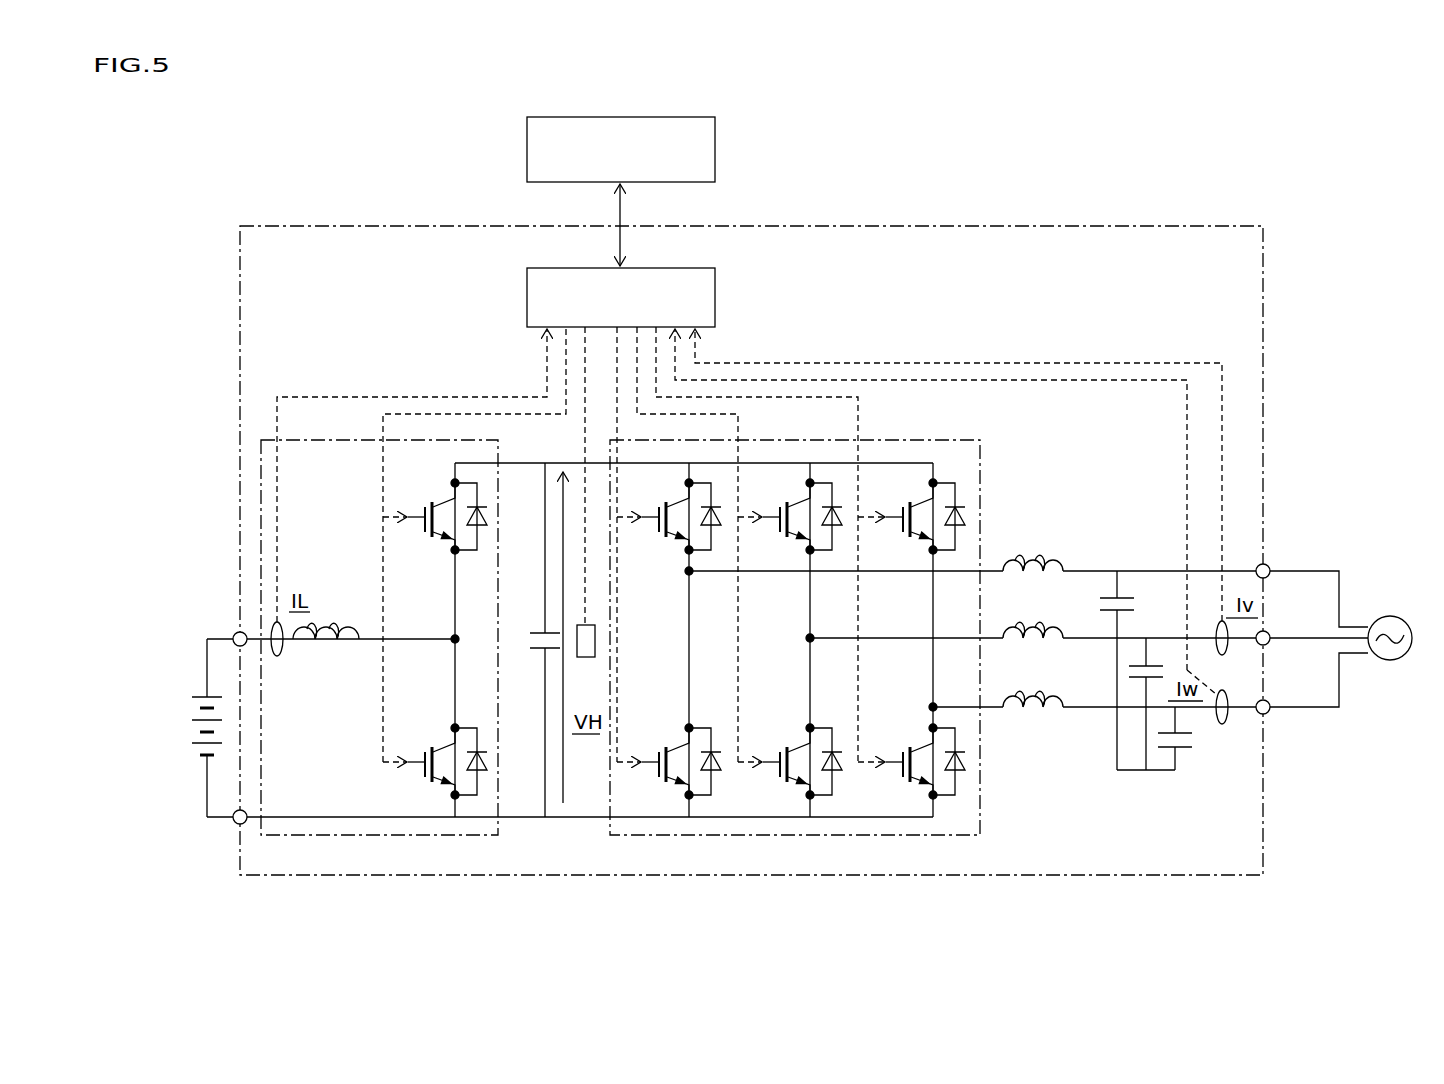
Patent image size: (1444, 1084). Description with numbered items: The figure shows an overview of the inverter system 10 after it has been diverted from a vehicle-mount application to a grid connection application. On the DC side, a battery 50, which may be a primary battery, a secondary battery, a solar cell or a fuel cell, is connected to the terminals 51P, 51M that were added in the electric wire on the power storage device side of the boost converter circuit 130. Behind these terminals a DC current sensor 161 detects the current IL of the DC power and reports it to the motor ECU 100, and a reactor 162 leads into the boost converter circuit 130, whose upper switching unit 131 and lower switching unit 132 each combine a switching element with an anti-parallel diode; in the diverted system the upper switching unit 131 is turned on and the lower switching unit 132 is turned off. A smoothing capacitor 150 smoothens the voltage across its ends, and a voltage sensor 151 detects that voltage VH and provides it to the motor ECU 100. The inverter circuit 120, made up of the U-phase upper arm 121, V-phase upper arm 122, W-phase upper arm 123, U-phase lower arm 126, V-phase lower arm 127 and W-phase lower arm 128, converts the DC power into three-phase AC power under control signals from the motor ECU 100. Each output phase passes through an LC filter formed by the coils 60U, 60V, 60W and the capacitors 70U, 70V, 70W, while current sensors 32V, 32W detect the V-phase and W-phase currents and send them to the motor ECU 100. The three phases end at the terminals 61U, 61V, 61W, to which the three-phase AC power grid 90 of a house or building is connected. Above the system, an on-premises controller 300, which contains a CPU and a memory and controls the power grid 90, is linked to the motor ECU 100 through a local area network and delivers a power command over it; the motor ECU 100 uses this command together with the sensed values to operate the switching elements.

The on-premises controller 300 is at (654, 117).
The motor ECU 100 is at (656, 268).
The inverter system 10 is at (274, 260).
The battery 50 is at (190, 723).
The terminal 51P is at (237, 632).
The terminal 51M is at (237, 824).
The DC current sensor 161 is at (276, 656).
The reactor 162 is at (341, 656).
The boost converter circuit 130 is at (455, 838).
The upper switching unit 131 is at (468, 556).
The lower switching unit 132 is at (470, 724).
The smoothing capacitor 150 is at (537, 656).
The voltage sensor 151 is at (588, 660).
The inverter circuit 120 is at (938, 838).
The U-phase upper arm 121 is at (706, 556).
The V-phase upper arm 122 is at (828, 556).
The W-phase upper arm 123 is at (949, 556).
The U-phase lower arm 126 is at (708, 724).
The V-phase lower arm 127 is at (828, 724).
The W-phase lower arm 128 is at (950, 724).
The coil 60U is at (1025, 567).
The coil 60V is at (1025, 634).
The coil 60W is at (1025, 703).
The capacitor 70U is at (1126, 596).
The capacitor 70V is at (1152, 665).
The capacitor 70W is at (1180, 750).
The current sensor 32V is at (1223, 655).
The current sensor 32W is at (1223, 724).
The terminal 61U is at (1268, 566).
The terminal 61V is at (1268, 633).
The terminal 61W is at (1268, 713).
The power grid 90 is at (1402, 624).